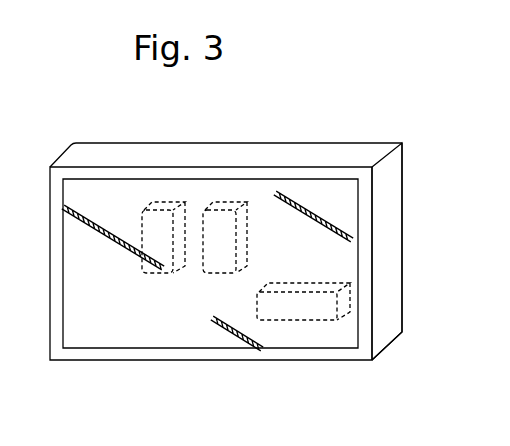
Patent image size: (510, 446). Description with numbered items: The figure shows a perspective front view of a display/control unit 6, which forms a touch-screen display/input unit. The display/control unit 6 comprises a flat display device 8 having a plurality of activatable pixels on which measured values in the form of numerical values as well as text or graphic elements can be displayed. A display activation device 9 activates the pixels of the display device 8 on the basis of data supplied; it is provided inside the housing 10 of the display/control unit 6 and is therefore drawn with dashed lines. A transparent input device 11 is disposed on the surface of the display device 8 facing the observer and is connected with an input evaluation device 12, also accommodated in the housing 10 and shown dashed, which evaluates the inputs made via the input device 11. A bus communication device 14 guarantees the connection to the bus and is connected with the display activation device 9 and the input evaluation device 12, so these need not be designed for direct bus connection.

The display/control unit 6 is at (118, 140).
The display device 8 is at (323, 208).
The display activation device 9 is at (157, 270).
The housing 10 is at (390, 242).
The input device 11 is at (268, 196).
The input evaluation device 12 is at (227, 268).
The bus communication device 14 is at (315, 312).